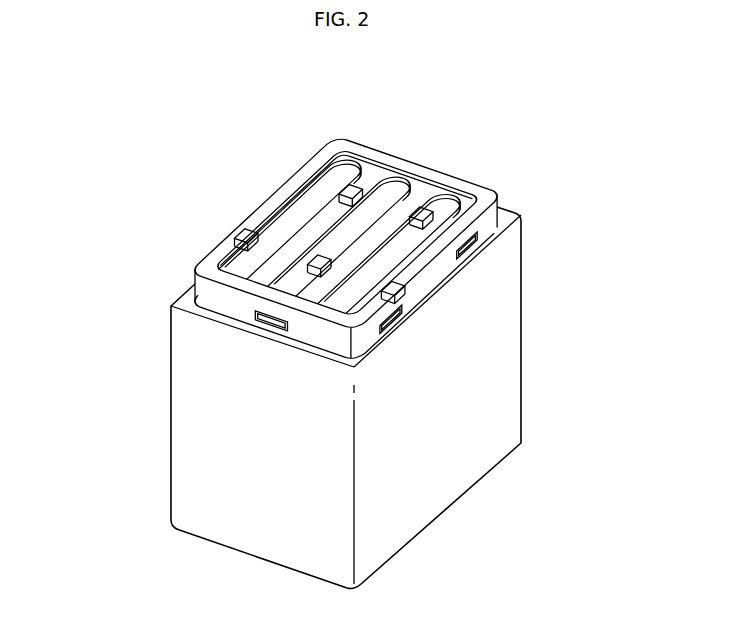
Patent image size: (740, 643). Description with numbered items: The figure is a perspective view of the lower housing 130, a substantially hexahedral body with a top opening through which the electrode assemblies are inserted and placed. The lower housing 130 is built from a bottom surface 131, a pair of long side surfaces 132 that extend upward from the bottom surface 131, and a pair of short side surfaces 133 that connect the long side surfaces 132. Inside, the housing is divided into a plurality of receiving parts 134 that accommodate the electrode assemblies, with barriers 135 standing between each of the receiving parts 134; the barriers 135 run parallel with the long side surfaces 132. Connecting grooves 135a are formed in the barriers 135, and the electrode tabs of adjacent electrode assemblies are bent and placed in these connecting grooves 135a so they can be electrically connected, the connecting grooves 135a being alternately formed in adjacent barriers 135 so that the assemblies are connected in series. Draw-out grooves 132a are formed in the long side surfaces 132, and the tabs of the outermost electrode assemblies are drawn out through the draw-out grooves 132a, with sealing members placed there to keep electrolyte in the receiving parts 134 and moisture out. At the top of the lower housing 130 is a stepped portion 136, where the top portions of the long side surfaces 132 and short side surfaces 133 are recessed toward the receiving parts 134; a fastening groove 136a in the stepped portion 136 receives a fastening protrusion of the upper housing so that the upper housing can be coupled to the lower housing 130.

The lower housing 130 is at (88, 105).
The bottom surface 131 is at (447, 512).
The long side surfaces 132 is at (388, 497).
The draw-out grooves 132a is at (235, 237).
The short side surfaces 133 is at (328, 427).
The receiving parts 134 is at (443, 199).
The barriers 135 is at (390, 243).
The connecting grooves 135a is at (417, 215).
The stepped portion 136 is at (202, 291).
The fastening groove 136a is at (264, 322).